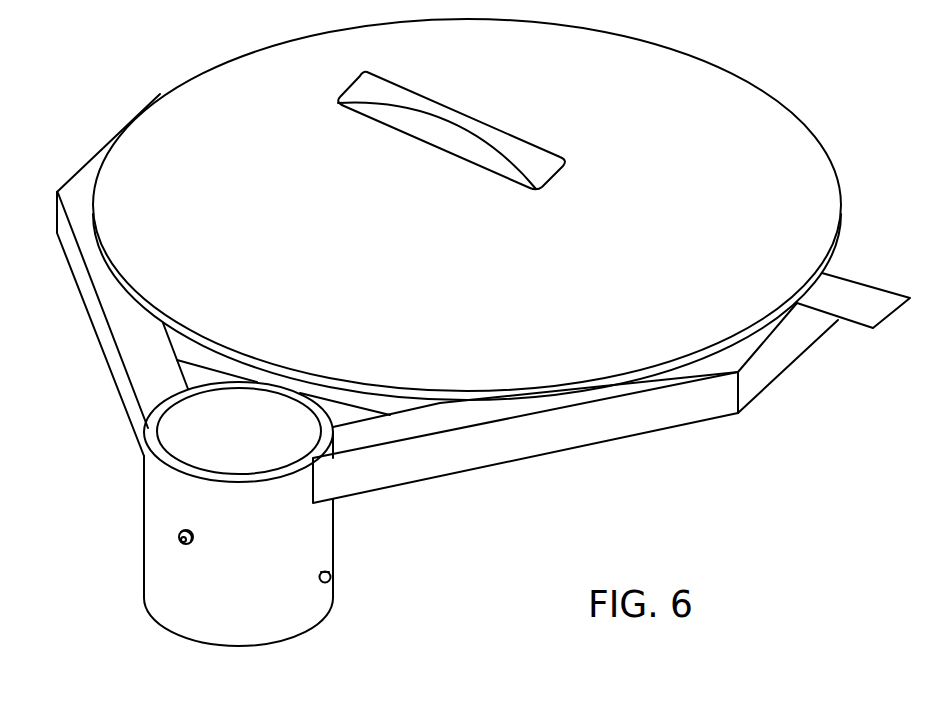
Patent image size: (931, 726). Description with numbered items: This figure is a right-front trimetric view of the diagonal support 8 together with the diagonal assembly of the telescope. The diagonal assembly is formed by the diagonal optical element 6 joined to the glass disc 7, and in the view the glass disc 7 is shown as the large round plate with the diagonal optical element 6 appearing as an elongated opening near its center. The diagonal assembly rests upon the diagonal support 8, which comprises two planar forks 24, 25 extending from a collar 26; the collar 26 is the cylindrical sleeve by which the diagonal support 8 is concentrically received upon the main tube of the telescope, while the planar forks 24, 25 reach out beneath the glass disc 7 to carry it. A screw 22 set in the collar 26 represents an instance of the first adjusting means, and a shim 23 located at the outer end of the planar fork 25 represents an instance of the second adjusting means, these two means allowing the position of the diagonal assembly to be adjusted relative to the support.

The diagonal optical element 6 is at (432, 152).
The glass disc 7 is at (580, 257).
The diagonal support 8 is at (400, 507).
The screw 22 is at (172, 542).
The shim 23 is at (870, 333).
The planar fork 24 is at (103, 372).
The planar fork 25 is at (637, 442).
The collar 26 is at (222, 603).